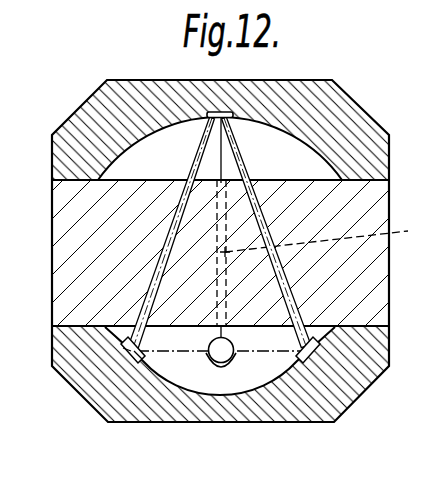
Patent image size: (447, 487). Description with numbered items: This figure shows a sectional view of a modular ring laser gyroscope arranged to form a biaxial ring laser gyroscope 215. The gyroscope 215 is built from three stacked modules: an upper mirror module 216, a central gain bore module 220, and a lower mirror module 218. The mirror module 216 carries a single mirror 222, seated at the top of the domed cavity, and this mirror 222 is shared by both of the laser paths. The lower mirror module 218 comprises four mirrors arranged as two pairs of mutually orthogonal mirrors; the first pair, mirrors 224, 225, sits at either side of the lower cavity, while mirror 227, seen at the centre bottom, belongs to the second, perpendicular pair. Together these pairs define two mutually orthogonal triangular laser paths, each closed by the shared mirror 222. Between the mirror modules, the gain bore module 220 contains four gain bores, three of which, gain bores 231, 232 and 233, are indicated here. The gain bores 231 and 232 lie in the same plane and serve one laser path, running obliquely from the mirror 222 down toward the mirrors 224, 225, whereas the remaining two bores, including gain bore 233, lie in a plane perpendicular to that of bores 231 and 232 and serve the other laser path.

The biaxial ring laser gyroscope 215 is at (72, 92).
The mirror module 216 is at (314, 107).
The mirror module 218 is at (100, 391).
The gain bore module 220 is at (68, 277).
The mirror 222 is at (189, 140).
The mirror 224 is at (124, 352).
The mirror 225 is at (323, 362).
The mirror 227 is at (220, 363).
The gain bore 231 is at (170, 237).
The gain bore 232 is at (333, 236).
The gain bore 233 is at (397, 218).